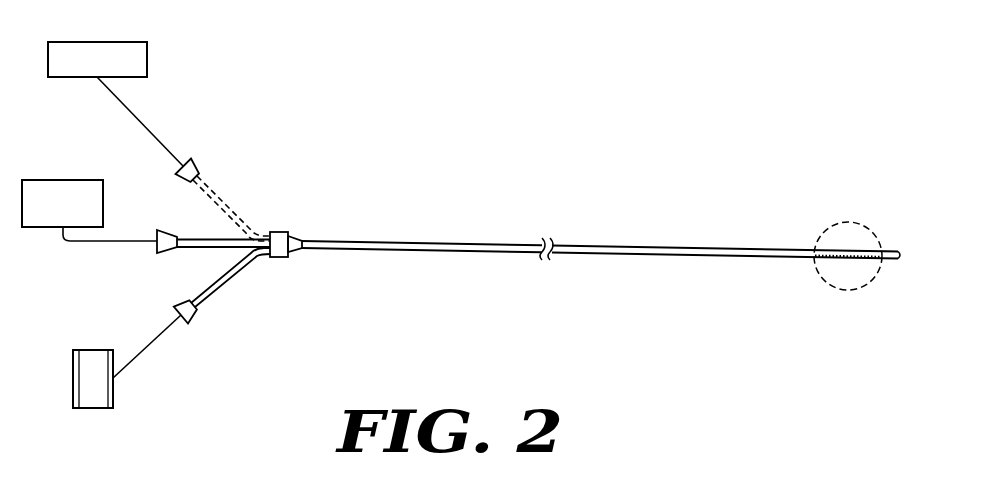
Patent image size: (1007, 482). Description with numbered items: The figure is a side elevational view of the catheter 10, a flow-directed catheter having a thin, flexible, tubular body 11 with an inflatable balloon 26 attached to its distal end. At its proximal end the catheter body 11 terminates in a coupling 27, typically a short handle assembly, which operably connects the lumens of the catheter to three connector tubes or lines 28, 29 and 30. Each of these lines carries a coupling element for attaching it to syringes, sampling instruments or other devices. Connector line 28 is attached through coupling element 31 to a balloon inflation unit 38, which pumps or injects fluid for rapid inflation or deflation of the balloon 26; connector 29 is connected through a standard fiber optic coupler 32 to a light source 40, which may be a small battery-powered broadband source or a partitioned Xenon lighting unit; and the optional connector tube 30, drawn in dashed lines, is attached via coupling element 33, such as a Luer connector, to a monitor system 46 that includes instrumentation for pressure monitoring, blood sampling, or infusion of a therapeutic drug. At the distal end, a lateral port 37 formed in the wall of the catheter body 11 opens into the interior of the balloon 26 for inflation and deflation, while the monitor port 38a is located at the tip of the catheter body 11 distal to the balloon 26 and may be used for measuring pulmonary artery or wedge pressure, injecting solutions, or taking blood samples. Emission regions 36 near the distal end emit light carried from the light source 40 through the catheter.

The catheter 10 is at (386, 230).
The catheter body 11 is at (500, 243).
The inflatable balloon 26 is at (823, 233).
The coupling 27 is at (279, 230).
The connector line 28 is at (218, 290).
The connector 29 is at (202, 238).
The connector tube 30 is at (220, 195).
The coupling element 31 is at (180, 300).
The fiber optic coupler 32 is at (161, 232).
The coupling element 33 is at (200, 163).
The emission regions 36 is at (842, 268).
The port 37 is at (855, 253).
The balloon inflation unit 38 is at (99, 357).
The monitor port 38a is at (899, 257).
The light source 40 is at (77, 190).
The monitor system 46 is at (100, 42).